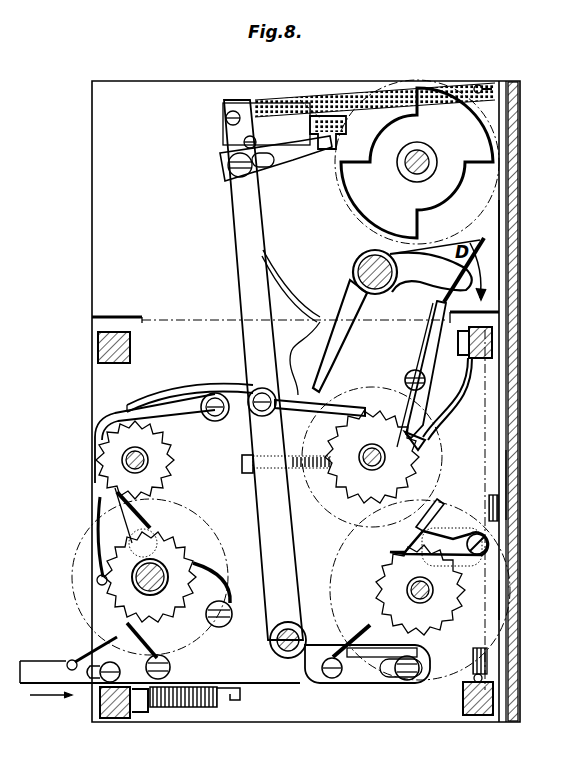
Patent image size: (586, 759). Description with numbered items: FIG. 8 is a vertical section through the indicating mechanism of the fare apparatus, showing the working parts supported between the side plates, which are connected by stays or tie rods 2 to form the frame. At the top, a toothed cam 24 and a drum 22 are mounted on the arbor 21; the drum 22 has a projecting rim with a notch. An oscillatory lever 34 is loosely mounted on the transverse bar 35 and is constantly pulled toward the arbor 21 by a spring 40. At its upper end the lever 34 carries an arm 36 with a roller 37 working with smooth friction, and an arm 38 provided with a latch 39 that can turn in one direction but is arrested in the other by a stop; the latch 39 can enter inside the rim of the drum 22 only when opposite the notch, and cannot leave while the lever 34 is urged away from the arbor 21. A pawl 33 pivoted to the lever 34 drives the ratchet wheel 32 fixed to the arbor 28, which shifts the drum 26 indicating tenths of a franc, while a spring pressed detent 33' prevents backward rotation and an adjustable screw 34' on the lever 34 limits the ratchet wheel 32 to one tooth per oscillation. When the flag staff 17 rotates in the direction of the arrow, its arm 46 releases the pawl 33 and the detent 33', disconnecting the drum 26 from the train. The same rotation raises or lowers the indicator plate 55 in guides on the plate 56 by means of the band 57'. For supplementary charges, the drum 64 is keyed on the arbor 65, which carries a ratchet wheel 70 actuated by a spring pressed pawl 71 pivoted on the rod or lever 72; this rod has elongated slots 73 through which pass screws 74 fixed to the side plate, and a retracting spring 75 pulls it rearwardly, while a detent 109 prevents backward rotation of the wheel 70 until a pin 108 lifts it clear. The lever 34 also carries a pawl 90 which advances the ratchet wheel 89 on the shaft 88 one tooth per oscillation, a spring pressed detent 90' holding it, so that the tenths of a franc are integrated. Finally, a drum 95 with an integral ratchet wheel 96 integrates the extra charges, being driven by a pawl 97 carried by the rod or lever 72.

The stays or tie rods 2 is at (130, 345).
The flag staff 17 is at (392, 321).
The arbor 21 is at (418, 165).
The drum 22 is at (362, 222).
The toothed cam 24 is at (417, 162).
The drum 26 is at (426, 445).
The arbor 28 is at (360, 440).
The ratchet wheel 32 is at (368, 470).
The pawl 33 is at (372, 441).
The spring pressed detent 33' is at (408, 368).
The oscillatory lever 34 is at (246, 370).
The adjustable screw 34' is at (286, 471).
The transverse bar 35 is at (270, 640).
The arm 36 is at (283, 165).
The roller 37 is at (322, 151).
The arm 38 is at (266, 125).
The latch 39 is at (312, 100).
The spring 40 is at (343, 96).
The arm 46 is at (424, 342).
The indicator plate 55 is at (528, 250).
The plate 56 is at (512, 485).
The wall portion 57' is at (528, 601).
The drum 64 is at (340, 588).
The arbor 65 is at (404, 590).
The ratchet wheel 70 is at (434, 613).
The spring pressed pawl 71 is at (363, 640).
The rod or lever 72 is at (43, 666).
The elongated slots 73 is at (98, 672).
The screws 74 is at (96, 716).
The retracting spring 75 is at (180, 680).
The shaft 88 is at (97, 478).
The ratchet wheel 89 is at (110, 450).
The pawl 90 is at (201, 389).
The spring pressed detent 90' is at (103, 515).
The drum 95 is at (175, 518).
The ratchet wheel 96 is at (172, 572).
The pawl 97 is at (97, 616).
The pin 108 is at (444, 504).
The detent 109 is at (408, 548).